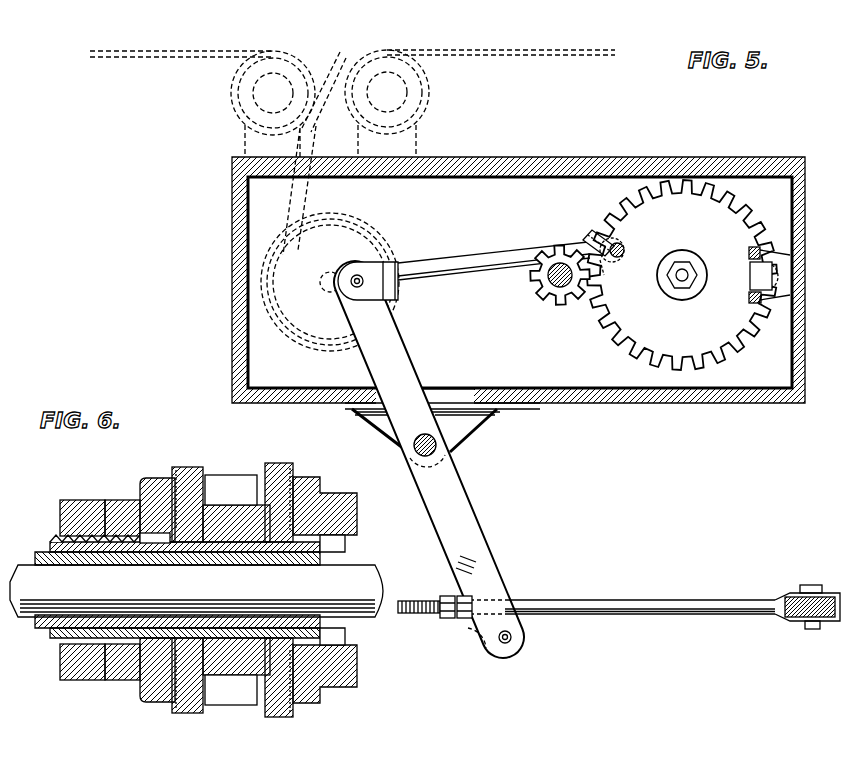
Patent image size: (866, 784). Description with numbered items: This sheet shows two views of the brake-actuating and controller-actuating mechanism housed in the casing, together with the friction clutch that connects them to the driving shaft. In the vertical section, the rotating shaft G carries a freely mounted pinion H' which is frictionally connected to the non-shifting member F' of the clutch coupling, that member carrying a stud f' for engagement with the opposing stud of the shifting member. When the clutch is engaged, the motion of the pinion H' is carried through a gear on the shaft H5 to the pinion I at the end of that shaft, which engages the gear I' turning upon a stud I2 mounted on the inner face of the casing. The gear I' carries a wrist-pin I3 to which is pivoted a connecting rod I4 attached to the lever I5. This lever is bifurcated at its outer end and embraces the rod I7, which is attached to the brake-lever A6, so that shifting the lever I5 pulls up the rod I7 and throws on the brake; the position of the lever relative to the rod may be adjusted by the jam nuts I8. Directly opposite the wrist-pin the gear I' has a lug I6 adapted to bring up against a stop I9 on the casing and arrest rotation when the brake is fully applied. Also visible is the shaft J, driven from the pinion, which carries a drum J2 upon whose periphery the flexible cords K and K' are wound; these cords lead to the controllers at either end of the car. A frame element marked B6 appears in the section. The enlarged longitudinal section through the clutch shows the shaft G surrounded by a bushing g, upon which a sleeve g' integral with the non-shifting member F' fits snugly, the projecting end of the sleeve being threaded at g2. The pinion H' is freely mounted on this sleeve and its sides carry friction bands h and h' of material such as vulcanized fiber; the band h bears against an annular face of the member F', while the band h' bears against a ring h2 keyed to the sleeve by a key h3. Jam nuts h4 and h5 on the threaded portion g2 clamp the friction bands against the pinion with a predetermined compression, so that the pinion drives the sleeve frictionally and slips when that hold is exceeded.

In FIG. 5, the flexible cord K is at (218, 153).
In FIG. 5, the flexible cord K' is at (480, 103).
In FIG. 5, the shaft J is at (330, 274).
In FIG. 5, the drum J2 is at (374, 248).
In FIG. 5, the connecting rod I4 is at (466, 263).
In FIG. 5, the pinion I is at (579, 243).
In FIG. 5, the wrist-pin I3 is at (625, 252).
In FIG. 5, the gear I' is at (682, 275).
In FIG. 5, the stud I2 is at (689, 270).
In FIG. 5, the lug I6 is at (592, 276).
In FIG. 5, the stop I9 is at (754, 284).
In FIG. 5, the frame casing B6 is at (806, 274).
In FIG. 5, the shaft H5 is at (558, 298).
In FIG. 5, the lever I5 is at (396, 350).
In FIG. 5, the rod I7 is at (627, 600).
In FIG. 5, the jam nuts I8 is at (460, 622).
In FIG. 5, the brake-lever A6 is at (808, 615).
In FIG. 6, the shaft G is at (196, 591).
In FIG. 6, the bushing g is at (166, 552).
In FIG. 6, the sleeve g' is at (185, 565).
In FIG. 6, the threaded portion g2 is at (66, 536).
In FIG. 6, the friction band h is at (293, 494).
In FIG. 6, the friction band h' is at (197, 493).
In FIG. 6, the ring h2 is at (152, 482).
In FIG. 6, the key h3 is at (151, 545).
In FIG. 6, the jam nut h4 is at (118, 505).
In FIG. 6, the jam nut h5 is at (85, 496).
In FIG. 6, the non-shifting member F' is at (342, 506).
In FIG. 6, the stud f' is at (355, 547).